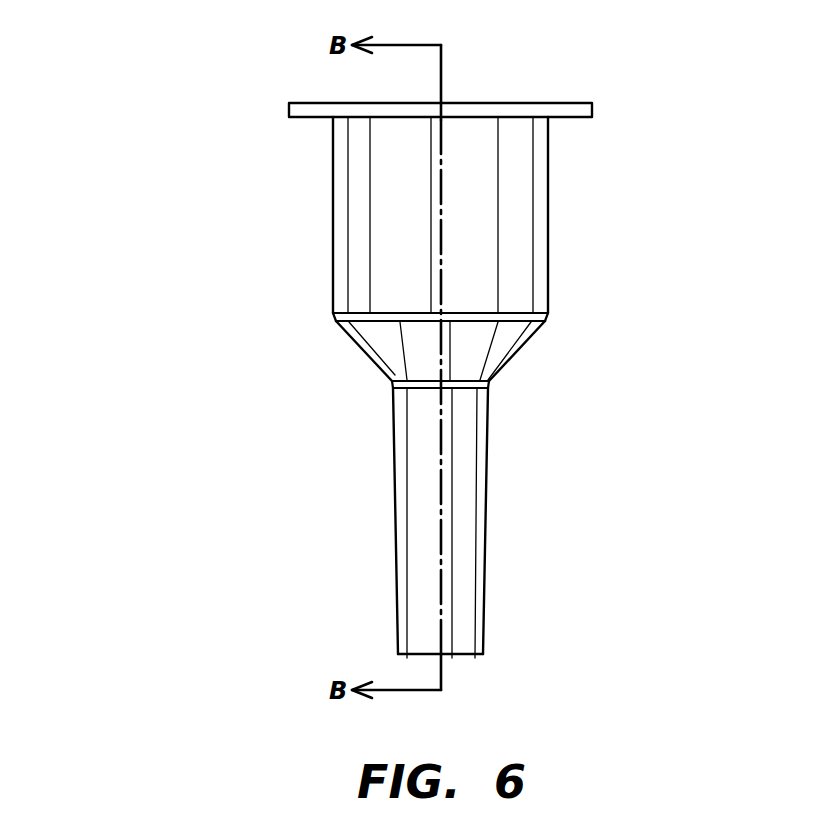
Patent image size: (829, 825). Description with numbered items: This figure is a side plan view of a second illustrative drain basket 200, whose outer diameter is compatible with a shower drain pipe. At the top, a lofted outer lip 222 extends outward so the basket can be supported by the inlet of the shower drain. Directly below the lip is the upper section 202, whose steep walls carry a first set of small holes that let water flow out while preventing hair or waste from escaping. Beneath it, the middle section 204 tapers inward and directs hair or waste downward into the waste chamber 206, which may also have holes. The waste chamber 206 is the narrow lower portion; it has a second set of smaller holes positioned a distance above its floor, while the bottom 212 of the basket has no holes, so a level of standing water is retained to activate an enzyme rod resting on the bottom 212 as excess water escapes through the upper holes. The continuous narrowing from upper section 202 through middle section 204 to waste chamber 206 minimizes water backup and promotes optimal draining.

The basket 200 is at (232, 77).
The upper section 202 is at (624, 122).
The middle section 204 is at (624, 327).
The waste chamber 206 is at (485, 485).
The bottom of the basket 212 is at (460, 656).
The lofted outer lip 222 is at (592, 103).